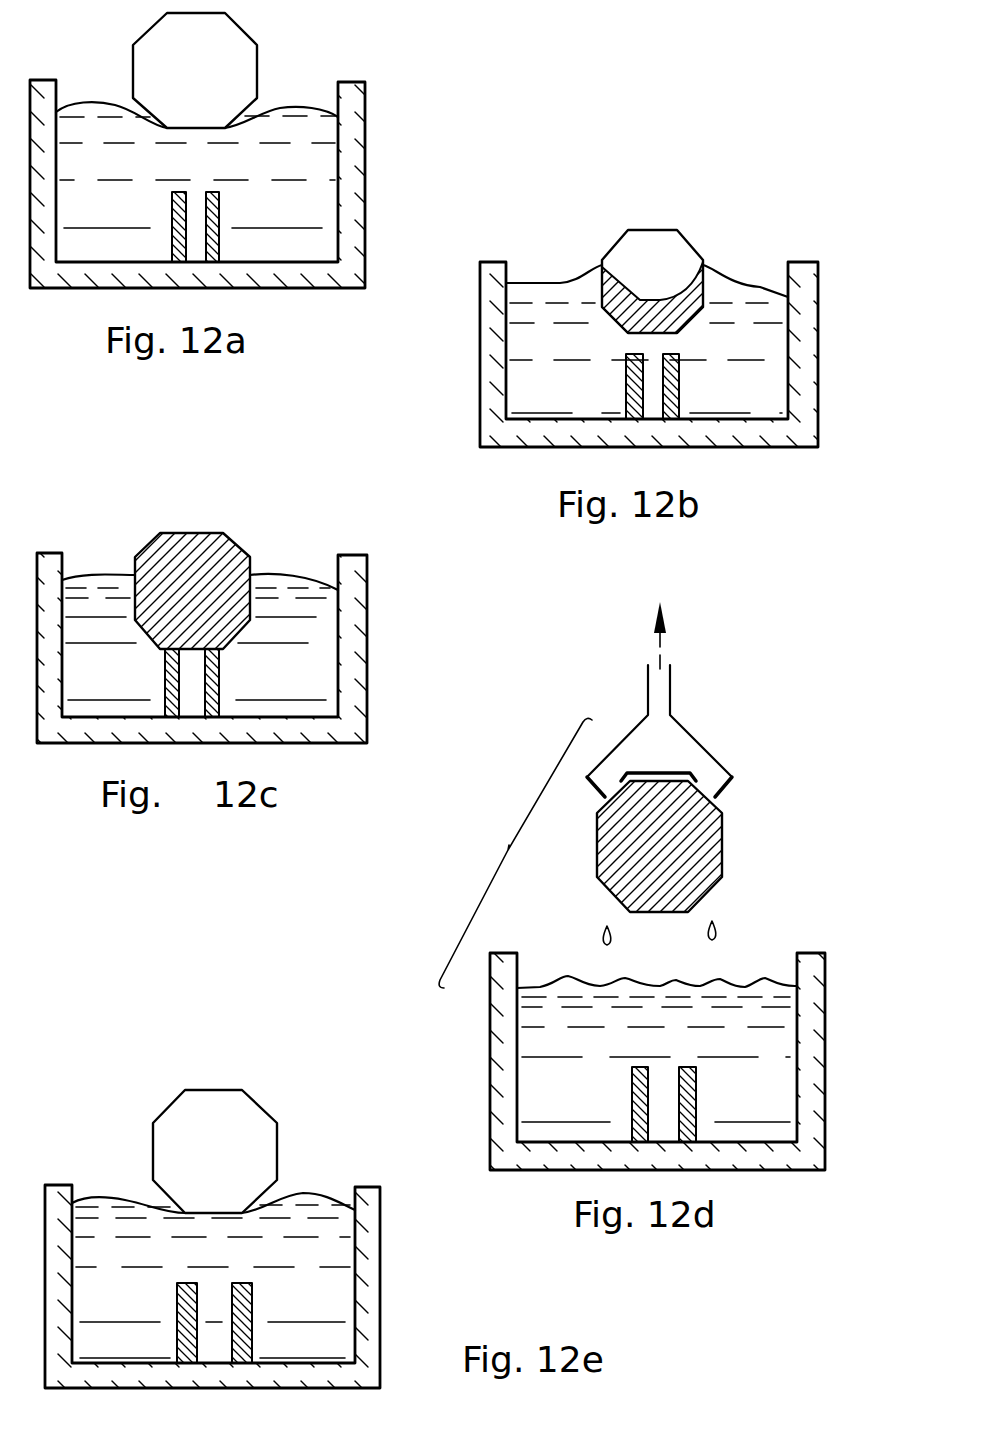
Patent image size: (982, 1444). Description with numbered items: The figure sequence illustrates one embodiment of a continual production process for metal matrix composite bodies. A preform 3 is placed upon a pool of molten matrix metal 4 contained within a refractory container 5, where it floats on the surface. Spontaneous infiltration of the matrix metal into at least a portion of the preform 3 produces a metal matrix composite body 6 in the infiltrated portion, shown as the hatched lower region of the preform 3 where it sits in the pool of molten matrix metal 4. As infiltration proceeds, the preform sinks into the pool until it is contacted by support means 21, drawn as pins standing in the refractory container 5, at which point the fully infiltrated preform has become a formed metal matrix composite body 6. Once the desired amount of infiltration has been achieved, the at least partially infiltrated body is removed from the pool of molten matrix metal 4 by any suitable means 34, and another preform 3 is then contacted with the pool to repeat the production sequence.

In FIG. 12A, the preform 3 is at (238, 68).
In FIG. 12B, the preform 3 is at (677, 248).
In FIG. 12E, the preform 3 is at (265, 1147).
In FIG. 12A, the molten matrix metal 4 is at (104, 170).
In FIG. 12B, the molten matrix metal 4 is at (536, 353).
In FIG. 12C, the molten matrix metal 4 is at (82, 673).
In FIG. 12D, the molten matrix metal 4 is at (580, 1088).
In FIG. 12E, the molten matrix metal 4 is at (104, 1280).
In FIG. 12A, the refractory container 5 is at (350, 170).
In FIG. 12B, the refractory container 5 is at (810, 338).
In FIG. 12C, the refractory container 5 is at (353, 645).
In FIG. 12D, the refractory container 5 is at (813, 1035).
In FIG. 12E, the refractory container 5 is at (367, 1277).
In FIG. 12B, the metal matrix composite body 6 is at (688, 308).
In FIG. 12C, the metal matrix composite body 6 is at (238, 552).
In FIG. 12D, the metal matrix composite body 6 is at (707, 860).
In FIG. 12A, the support means 21 is at (215, 205).
In FIG. 12B, the support means 21 is at (668, 397).
In FIG. 12C, the support means 21 is at (213, 668).
In FIG. 12D, the support means 21 is at (688, 1095).
In FIG. 12E, the support means 21 is at (247, 1313).
In FIG. 12D, the removal means 34 is at (668, 692).